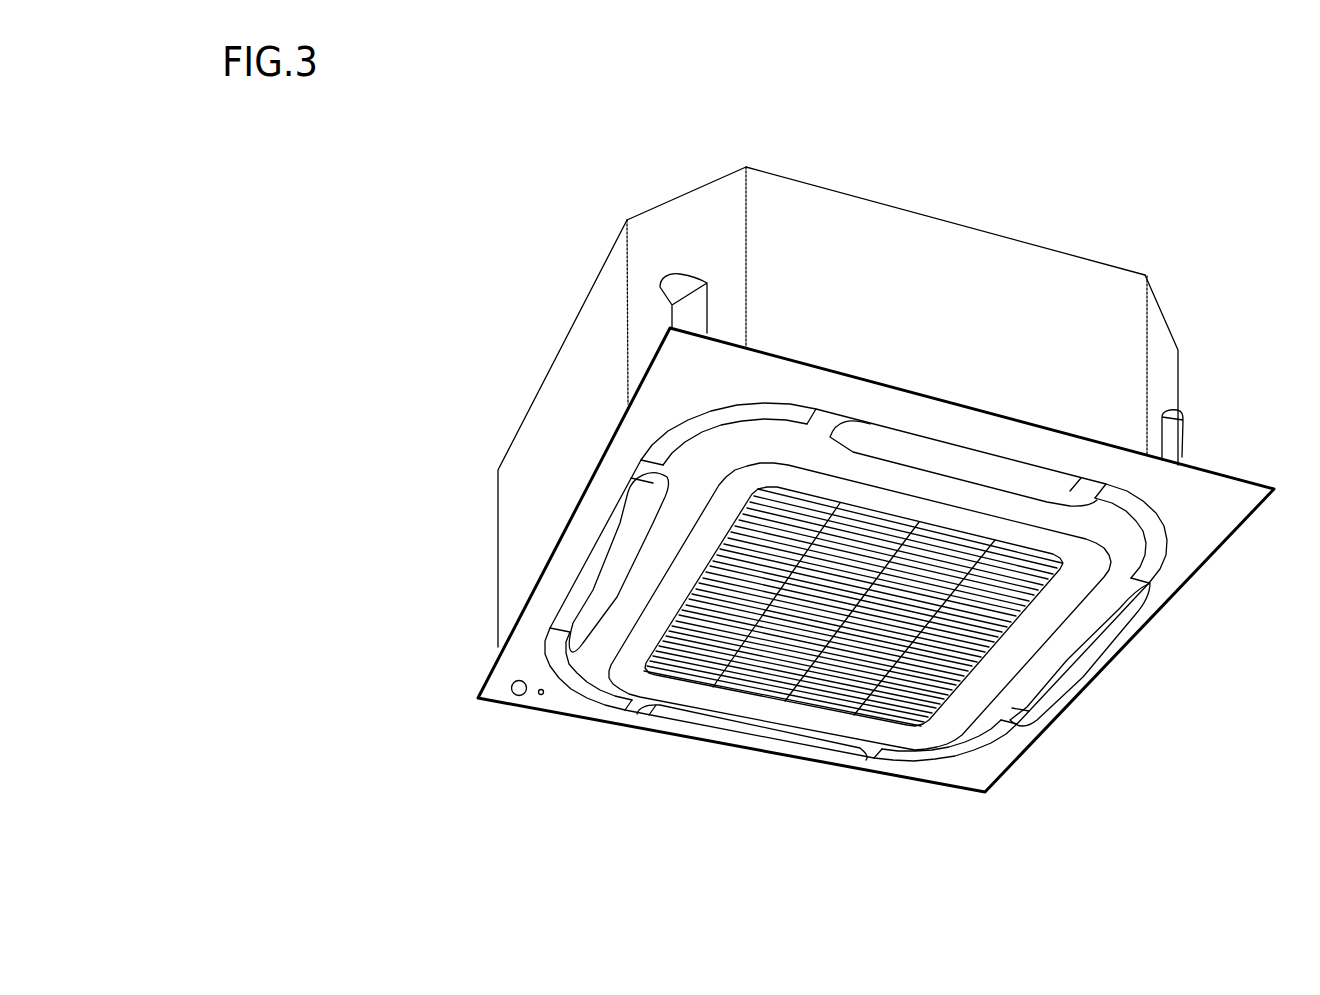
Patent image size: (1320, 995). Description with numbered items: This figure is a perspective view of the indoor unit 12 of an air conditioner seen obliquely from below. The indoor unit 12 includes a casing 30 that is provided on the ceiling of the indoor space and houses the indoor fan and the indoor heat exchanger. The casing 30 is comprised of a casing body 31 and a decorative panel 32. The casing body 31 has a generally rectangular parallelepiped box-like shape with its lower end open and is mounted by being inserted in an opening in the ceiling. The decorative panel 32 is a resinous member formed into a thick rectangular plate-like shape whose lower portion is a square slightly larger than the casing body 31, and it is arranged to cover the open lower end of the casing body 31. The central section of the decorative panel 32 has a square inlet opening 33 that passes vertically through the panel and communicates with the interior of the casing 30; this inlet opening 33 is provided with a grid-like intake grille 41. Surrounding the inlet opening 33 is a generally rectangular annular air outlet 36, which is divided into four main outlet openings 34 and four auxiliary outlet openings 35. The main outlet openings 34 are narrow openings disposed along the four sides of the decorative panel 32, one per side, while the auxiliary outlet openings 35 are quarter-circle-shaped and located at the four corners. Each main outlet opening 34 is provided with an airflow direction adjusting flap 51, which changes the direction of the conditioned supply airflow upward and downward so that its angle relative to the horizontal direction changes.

The indoor unit 12 is at (1075, 176).
The casing 30 is at (1106, 270).
The casing body 31 is at (985, 232).
The decorative panel 32 is at (1012, 758).
The inlet opening 33 is at (950, 678).
The main outlet opening 34 is at (860, 418).
The auxiliary outlet opening 35 is at (714, 424).
The air outlet 36 is at (745, 411).
The intake grille 41 is at (895, 747).
The airflow direction adjusting flap 51 is at (1000, 476).